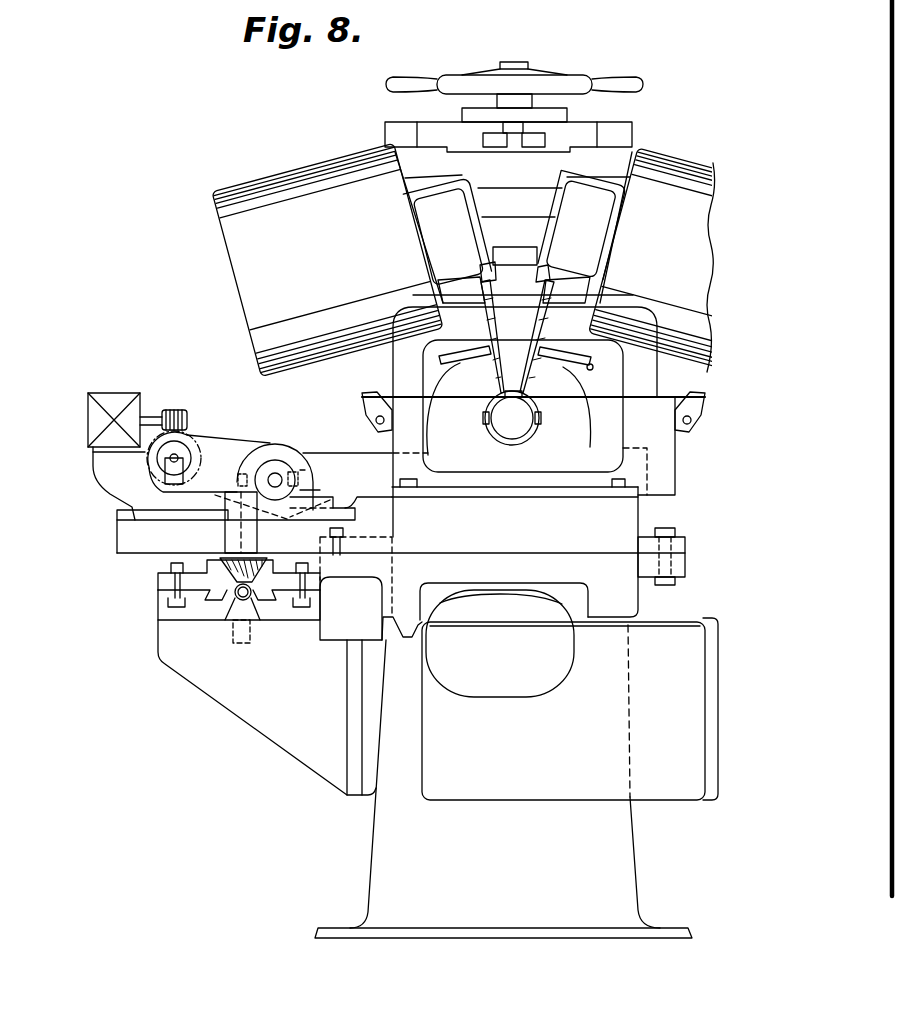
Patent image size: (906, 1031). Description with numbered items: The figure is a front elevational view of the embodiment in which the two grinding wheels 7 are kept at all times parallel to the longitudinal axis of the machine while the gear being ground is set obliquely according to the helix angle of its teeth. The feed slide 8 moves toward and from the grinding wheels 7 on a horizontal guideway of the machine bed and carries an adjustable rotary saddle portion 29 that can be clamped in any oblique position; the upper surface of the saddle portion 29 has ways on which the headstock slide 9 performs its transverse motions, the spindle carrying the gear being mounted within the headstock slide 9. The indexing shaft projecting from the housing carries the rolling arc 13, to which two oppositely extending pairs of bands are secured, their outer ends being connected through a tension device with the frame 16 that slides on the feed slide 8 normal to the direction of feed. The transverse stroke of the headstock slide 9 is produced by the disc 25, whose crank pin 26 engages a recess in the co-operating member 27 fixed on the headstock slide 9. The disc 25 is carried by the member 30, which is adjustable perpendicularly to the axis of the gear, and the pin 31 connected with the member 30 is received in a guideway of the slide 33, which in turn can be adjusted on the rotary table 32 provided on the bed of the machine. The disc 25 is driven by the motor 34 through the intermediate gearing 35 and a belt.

The grinding wheels 7 is at (190, 672).
The feed slide 8 is at (627, 597).
The headstock slide 9 is at (660, 455).
The rolling arc 13 is at (497, 422).
The frame 16 is at (630, 318).
The disc 25 is at (270, 453).
The crank pin 26 is at (305, 470).
The co-operating member 27 is at (353, 462).
The rotary saddle portion 29 is at (627, 522).
The member 30 is at (127, 475).
The pin 31 is at (232, 582).
The rotary table 32 is at (168, 612).
The slide 33 is at (165, 585).
The motor 34 is at (122, 396).
The intermediate gearing 35 is at (178, 410).